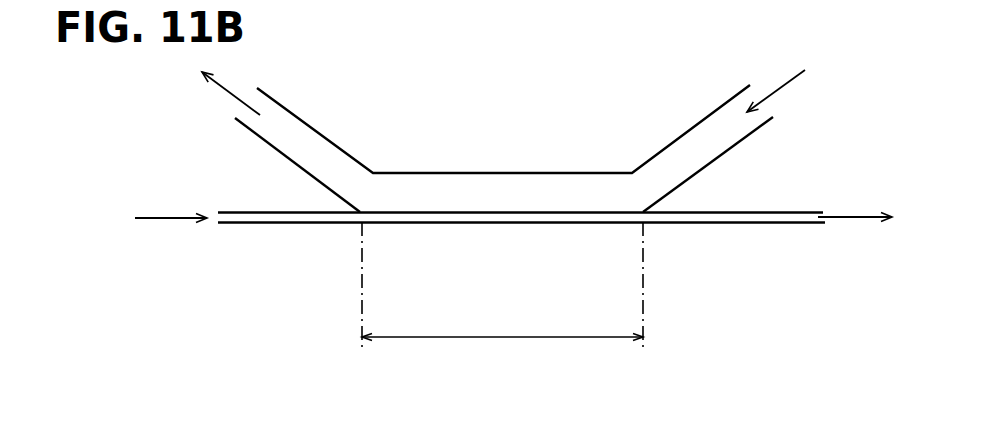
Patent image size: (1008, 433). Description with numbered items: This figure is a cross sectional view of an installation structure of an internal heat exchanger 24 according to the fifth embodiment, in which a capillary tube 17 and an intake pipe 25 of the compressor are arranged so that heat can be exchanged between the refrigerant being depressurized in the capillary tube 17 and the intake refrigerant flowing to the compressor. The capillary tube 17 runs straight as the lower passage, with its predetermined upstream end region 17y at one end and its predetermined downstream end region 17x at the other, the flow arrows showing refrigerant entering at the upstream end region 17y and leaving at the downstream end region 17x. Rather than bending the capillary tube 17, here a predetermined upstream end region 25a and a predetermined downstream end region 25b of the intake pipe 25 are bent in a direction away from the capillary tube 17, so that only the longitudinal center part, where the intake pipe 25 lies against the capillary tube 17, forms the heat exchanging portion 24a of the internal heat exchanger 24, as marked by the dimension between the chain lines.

The capillary tube 17 is at (478, 225).
The predetermined downstream end region 17x is at (740, 213).
The predetermined upstream end region 17y is at (267, 217).
The internal heat exchanger 24 is at (465, 172).
The heat exchanging portion 24a is at (502, 310).
The intake pipe 25 is at (563, 172).
The predetermined upstream end region 25a is at (685, 130).
The predetermined downstream end region 25b is at (323, 132).